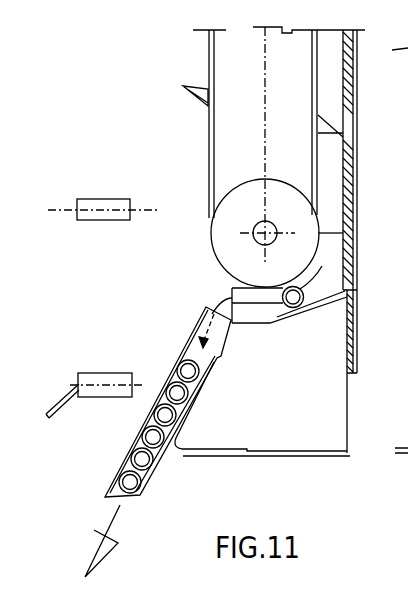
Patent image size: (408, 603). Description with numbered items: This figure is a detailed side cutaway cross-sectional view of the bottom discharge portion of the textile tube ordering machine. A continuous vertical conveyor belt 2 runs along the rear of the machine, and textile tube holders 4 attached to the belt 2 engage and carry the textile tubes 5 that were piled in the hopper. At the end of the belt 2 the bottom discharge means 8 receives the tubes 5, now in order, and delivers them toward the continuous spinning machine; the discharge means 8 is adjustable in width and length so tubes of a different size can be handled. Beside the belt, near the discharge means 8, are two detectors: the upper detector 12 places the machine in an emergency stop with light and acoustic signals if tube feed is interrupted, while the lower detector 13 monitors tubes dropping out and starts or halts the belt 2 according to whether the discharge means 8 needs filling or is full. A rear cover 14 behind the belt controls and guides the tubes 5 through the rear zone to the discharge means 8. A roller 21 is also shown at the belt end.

The vertical conveyor belt 2 is at (208, 132).
The textile tube holder 4 is at (197, 87).
The textile tube 5 is at (110, 477).
The bottom discharge means 8 is at (183, 333).
The upper detector 12 is at (88, 203).
The lower detector 13 is at (90, 378).
The rear cover 14 is at (367, 241).
The roller 21 is at (309, 233).